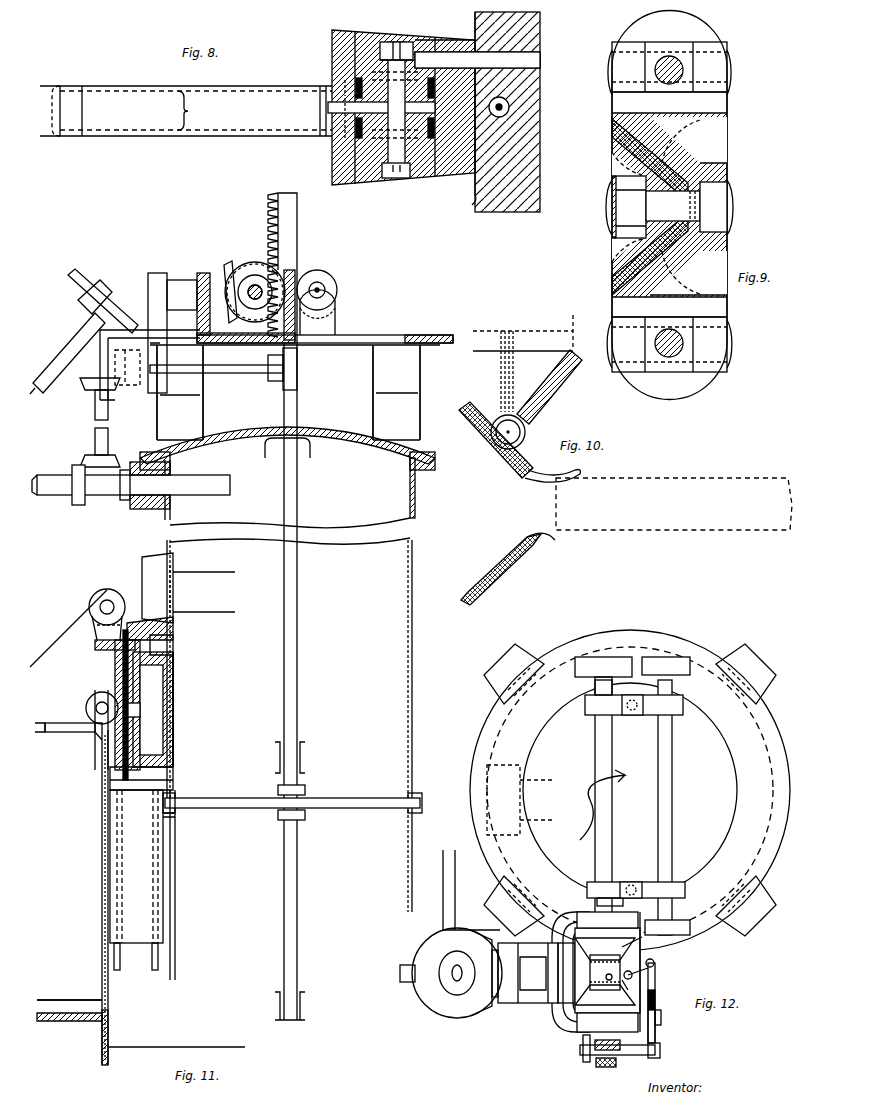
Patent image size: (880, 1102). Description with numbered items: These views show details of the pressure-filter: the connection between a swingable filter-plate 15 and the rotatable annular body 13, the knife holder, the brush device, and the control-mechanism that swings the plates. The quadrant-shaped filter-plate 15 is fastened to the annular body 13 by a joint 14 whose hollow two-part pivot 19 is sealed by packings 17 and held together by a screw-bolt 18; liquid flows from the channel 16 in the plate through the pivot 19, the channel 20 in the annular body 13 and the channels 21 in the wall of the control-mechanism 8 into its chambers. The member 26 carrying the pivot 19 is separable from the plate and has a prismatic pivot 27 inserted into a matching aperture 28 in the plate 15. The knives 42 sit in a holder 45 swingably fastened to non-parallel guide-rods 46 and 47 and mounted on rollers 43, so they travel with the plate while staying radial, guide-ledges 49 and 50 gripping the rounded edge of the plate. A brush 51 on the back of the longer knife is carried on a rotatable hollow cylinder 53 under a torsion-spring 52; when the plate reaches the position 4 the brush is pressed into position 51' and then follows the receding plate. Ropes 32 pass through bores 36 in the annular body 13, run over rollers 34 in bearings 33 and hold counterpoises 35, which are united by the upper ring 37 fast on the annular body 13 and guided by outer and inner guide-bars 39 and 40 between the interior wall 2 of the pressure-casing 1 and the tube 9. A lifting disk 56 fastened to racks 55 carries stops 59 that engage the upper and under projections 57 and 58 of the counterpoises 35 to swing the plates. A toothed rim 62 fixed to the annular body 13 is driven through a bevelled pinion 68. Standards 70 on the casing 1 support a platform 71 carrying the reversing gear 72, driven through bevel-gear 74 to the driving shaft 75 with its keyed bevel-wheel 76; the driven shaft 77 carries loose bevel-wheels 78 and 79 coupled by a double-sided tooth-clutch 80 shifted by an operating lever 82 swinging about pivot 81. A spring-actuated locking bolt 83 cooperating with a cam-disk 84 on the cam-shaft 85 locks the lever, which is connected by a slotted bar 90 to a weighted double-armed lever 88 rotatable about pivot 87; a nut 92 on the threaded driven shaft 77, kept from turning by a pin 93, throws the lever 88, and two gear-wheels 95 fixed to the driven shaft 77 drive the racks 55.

In FIG. 11, the pressure-casing 1 is at (414, 496).
In FIG. 11, the interior wall 2 is at (108, 1000).
In FIG. 10, the plate 4 is at (538, 351).
In FIG. 11, the control-mechanism 8 is at (165, 688).
In FIG. 10, the tube 9 is at (533, 331).
In FIG. 11, the tube 9 is at (174, 712).
In FIG. 8, the annular body 13 is at (476, 192).
In FIG. 11, the annular body 13 is at (118, 655).
In FIG. 8, the joint 14 is at (452, 40).
In FIG. 11, the joint 14 is at (96, 698).
In FIG. 8, the filter-plate 15 is at (60, 88).
In FIG. 10, the filter-plate 15 is at (615, 479).
In FIG. 11, the filter-plate 15 is at (68, 1001).
In FIG. 8, the channel 16 is at (381, 109).
In FIG. 8, the packings 17 is at (352, 80).
In FIG. 8, the screw-bolt 18 is at (398, 178).
In FIG. 8, the hollow two-part pivot 19 is at (362, 36).
In FIG. 8, the channel 20 is at (477, 59).
In FIG. 11, the channels 21 is at (140, 708).
In FIG. 8, the member 26 is at (320, 88).
In FIG. 11, the member 26 is at (88, 712).
In FIG. 11, the prismatic pivot 27 is at (40, 718).
In FIG. 8, the aperture 28 is at (196, 110).
In FIG. 11, the aperture 28 is at (65, 718).
In FIG. 11, the ropes 32 is at (68, 628).
In FIG. 11, the bearings 33 is at (97, 632).
In FIG. 11, the rollers 34 is at (103, 592).
In FIG. 11, the counterpoises 35 is at (136, 944).
In FIG. 11, the bores 36 is at (150, 626).
In FIG. 11, the upper ring 37 is at (174, 764).
In FIG. 11, the outer guide-bar 39 is at (120, 970).
In FIG. 11, the inner guide-bar 40 is at (155, 970).
In FIG. 9, the knives 42 is at (618, 148).
In FIG. 10, the knives 42 is at (500, 455).
In FIG. 9, the rollers 43 is at (620, 36).
In FIG. 9, the holder 45 is at (728, 132).
In FIG. 9, the guide-rod 46 is at (670, 44).
In FIG. 9, the guide-rod 47 is at (664, 370).
In FIG. 10, the guide-ledge 49 is at (555, 540).
In FIG. 10, the guide-ledge 50 is at (546, 476).
In FIG. 10, the brush 51 is at (519, 371).
In FIG. 10, the brush position 51' is at (557, 387).
In FIG. 10, the torsion-spring 52 is at (521, 440).
In FIG. 10, the outer ring 53 is at (526, 430).
In FIG. 11, the racks 55 is at (297, 214).
In FIG. 12, the racks 55 is at (630, 716).
In FIG. 11, the lifting disk 56 is at (236, 798).
In FIG. 11, the upper projection 57 is at (176, 778).
In FIG. 11, the under projection 58 is at (176, 816).
In FIG. 11, the stops 59 is at (176, 794).
In FIG. 11, the toothed rim 62 is at (173, 640).
In FIG. 11, the bevelled pinion 68 is at (142, 566).
In FIG. 11, the standards 70 is at (203, 414).
In FIG. 12, the standards 70 is at (552, 870).
In FIG. 11, the platform 71 is at (385, 336).
In FIG. 12, the platform 71 is at (530, 738).
In FIG. 11, the reversing gear 72 is at (252, 335).
In FIG. 12, the reversing gear 72 is at (568, 926).
In FIG. 11, the bevel-gear 74 is at (120, 280).
In FIG. 12, the bevel-gear 74 is at (451, 973).
In FIG. 11, the driving shaft 75 is at (182, 280).
In FIG. 12, the driving shaft 75 is at (525, 973).
In FIG. 11, the bevel-wheel 76 is at (222, 270).
In FIG. 12, the bevel-wheel 76 is at (578, 988).
In FIG. 11, the driven shaft 77 is at (248, 285).
In FIG. 12, the driven shaft 77 is at (608, 830).
In FIG. 11, the bevel-wheel 78 is at (258, 275).
In FIG. 12, the bevel-wheel 78 is at (628, 1005).
In FIG. 11, the bevel-wheel 79 is at (260, 277).
In FIG. 12, the bevel-wheel 79 is at (640, 945).
In FIG. 12, the double-sided tooth-clutch 80 is at (606, 977).
In FIG. 12, the pivot 81 is at (632, 975).
In FIG. 12, the operating lever 82 is at (630, 988).
In FIG. 12, the locking bolt 83 is at (655, 963).
In FIG. 11, the cam-disk 84 is at (297, 376).
In FIG. 11, the cam-shaft 85 is at (244, 373).
In FIG. 12, the pivot 87 is at (661, 1020).
In FIG. 11, the double-armed lever 88 is at (226, 492).
In FIG. 12, the double-armed lever 88 is at (656, 994).
In FIG. 12, the slotted bar 90 is at (656, 1010).
In FIG. 12, the nut 92 is at (617, 1062).
In FIG. 12, the pin 93 is at (580, 1048).
In FIG. 12, the gear-wheels 95 is at (585, 715).